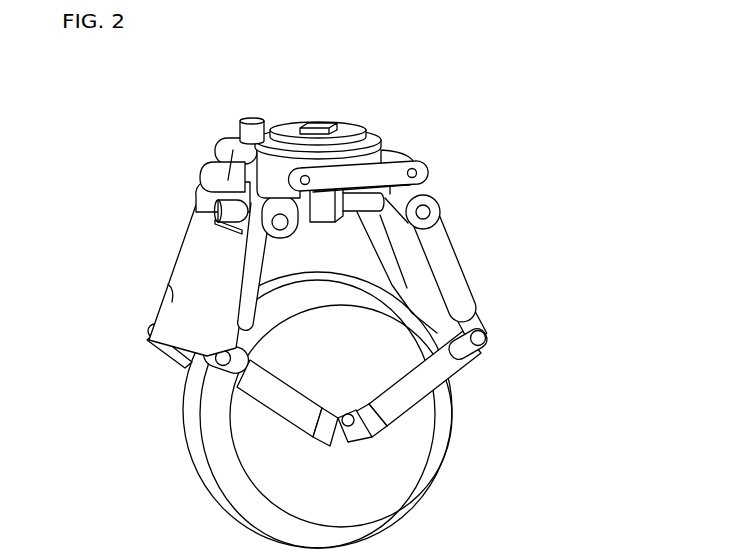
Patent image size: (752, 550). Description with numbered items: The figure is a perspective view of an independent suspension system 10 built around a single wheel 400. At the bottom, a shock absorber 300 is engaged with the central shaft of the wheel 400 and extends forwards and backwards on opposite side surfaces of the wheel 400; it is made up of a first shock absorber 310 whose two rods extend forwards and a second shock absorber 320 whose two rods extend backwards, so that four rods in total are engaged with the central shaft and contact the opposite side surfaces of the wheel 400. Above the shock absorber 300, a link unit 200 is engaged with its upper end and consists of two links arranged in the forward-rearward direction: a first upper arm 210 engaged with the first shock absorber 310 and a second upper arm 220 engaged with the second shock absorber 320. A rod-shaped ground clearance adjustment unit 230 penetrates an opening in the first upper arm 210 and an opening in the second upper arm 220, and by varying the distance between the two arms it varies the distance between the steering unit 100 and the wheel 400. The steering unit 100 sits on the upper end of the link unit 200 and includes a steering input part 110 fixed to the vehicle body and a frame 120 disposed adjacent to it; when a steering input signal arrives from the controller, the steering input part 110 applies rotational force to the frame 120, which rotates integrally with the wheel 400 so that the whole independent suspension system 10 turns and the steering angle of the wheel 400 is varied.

The independent suspension system 10 is at (313, 104).
The steering unit 100 is at (410, 124).
The steering input part 110 is at (240, 130).
The frame 120 is at (387, 129).
The link unit 200 is at (316, 259).
The first upper arm 210 is at (447, 268).
The second upper arm 220 is at (180, 272).
The ground clearance adjustment unit 230 is at (348, 203).
The shock absorber 300 is at (343, 374).
The first shock absorber 310 is at (450, 392).
The second shock absorber 320 is at (257, 392).
The wheel 400 is at (403, 475).